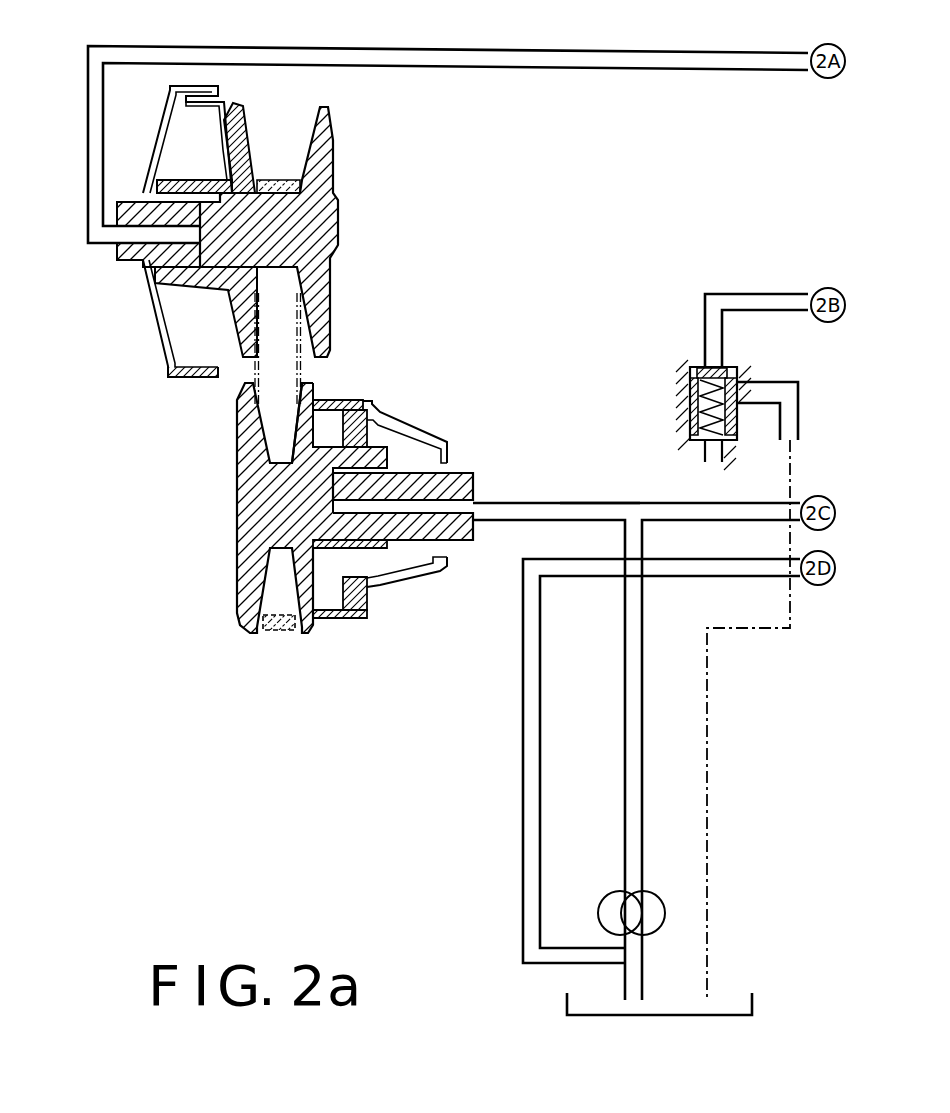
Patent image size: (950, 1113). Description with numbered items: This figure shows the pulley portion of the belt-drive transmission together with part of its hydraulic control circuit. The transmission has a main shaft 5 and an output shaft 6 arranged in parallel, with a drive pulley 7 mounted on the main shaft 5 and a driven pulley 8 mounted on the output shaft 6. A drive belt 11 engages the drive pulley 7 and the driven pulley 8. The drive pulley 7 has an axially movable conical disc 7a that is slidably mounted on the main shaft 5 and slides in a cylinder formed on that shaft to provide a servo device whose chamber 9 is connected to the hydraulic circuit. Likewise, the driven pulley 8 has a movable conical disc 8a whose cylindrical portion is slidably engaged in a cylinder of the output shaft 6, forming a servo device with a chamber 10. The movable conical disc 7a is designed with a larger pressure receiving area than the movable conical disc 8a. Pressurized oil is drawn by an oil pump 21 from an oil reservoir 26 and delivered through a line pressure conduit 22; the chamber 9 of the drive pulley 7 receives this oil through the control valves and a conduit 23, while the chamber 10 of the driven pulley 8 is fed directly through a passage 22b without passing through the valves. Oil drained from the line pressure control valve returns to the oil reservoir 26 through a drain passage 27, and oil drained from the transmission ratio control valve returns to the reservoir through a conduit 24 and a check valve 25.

The main shaft 5 is at (134, 256).
The output shaft 6 is at (461, 485).
The drive pulley 7 is at (341, 130).
The movable conical disc 7a is at (244, 128).
The driven pulley 8 is at (281, 508).
The movable conical disc 8a is at (300, 436).
The chamber 9 is at (204, 155).
The chamber 10 is at (406, 561).
The drive belt 11 is at (283, 633).
The oil pump 21 is at (657, 905).
The line pressure conduit 22 is at (760, 502).
The passage 22b is at (601, 503).
The conduit 23 is at (645, 51).
The conduit 24 is at (765, 294).
The check valve 25 is at (690, 410).
The oil reservoir 26 is at (775, 993).
The drain passage 27 is at (680, 576).